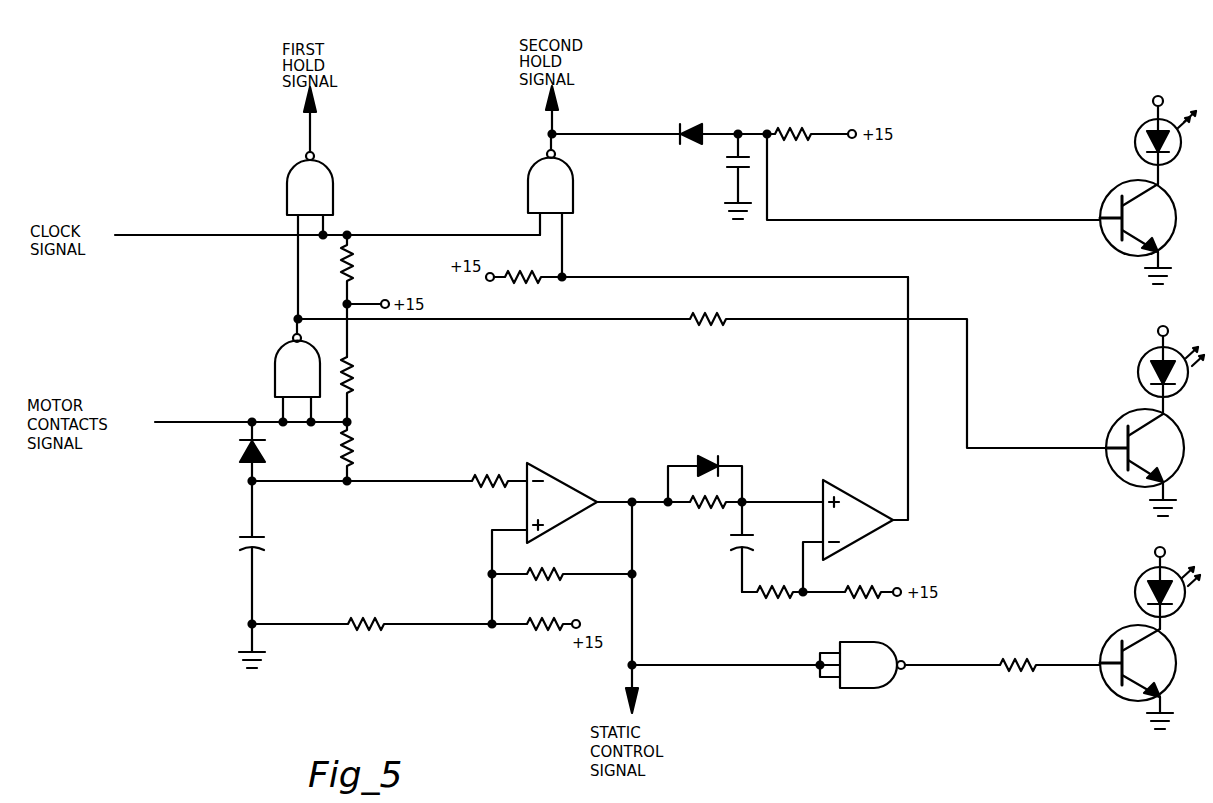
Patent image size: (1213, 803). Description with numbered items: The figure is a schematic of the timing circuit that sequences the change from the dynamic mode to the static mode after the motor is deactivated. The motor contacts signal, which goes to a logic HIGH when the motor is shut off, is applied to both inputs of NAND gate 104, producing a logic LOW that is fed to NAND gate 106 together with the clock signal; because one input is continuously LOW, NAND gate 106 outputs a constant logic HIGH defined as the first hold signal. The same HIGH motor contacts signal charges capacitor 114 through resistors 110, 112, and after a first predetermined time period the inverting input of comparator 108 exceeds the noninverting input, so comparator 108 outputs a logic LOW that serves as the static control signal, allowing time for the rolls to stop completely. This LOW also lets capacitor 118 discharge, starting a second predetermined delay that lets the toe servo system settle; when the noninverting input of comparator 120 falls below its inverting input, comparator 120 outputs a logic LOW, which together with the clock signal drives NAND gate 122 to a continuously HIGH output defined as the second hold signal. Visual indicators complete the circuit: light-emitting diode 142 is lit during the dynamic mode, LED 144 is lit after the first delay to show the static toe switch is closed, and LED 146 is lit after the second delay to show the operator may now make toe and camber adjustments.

The NAND gate 104 is at (275, 355).
The NAND gate 106 is at (333, 178).
The comparator 108 is at (546, 470).
The resistor 110 is at (355, 372).
The resistor 112 is at (355, 446).
The capacitor 114 is at (240, 528).
The capacitor 118 is at (728, 538).
The comparator 120 is at (876, 450).
The NAND gate 122 is at (528, 190).
The light-emitting diode 142 is at (1138, 370).
The light-emitting diode 144 is at (1135, 588).
The light-emitting diode 146 is at (1135, 140).